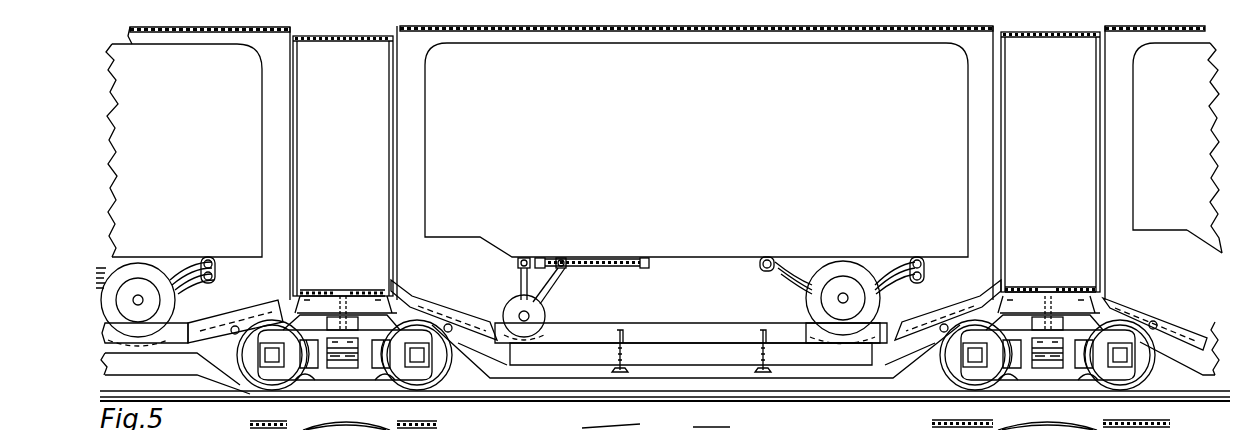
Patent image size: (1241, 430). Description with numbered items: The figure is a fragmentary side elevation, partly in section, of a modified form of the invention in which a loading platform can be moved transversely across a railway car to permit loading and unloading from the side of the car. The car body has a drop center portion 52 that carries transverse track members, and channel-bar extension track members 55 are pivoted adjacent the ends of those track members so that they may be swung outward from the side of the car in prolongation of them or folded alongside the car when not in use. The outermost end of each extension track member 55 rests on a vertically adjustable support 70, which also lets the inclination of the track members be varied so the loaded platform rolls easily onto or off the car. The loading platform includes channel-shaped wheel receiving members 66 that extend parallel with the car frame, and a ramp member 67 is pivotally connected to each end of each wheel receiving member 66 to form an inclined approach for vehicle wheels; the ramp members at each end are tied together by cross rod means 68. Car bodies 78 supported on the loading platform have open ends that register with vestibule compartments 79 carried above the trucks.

The drop center portion 52 is at (684, 372).
The extension track member 55 is at (574, 358).
The wheel receiving member 66 is at (740, 332).
The ramp member 67 is at (231, 311).
The cross rod means 68 is at (233, 327).
The vertically adjustable support 70 is at (621, 337).
The car body 78 is at (283, 80).
The vestibule compartment 79 is at (355, 198).